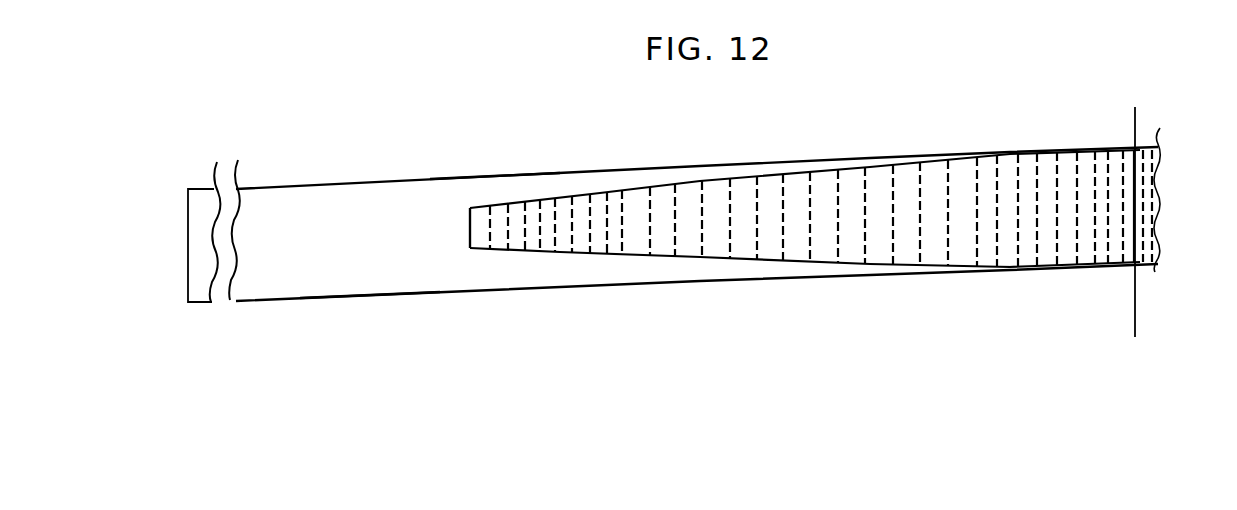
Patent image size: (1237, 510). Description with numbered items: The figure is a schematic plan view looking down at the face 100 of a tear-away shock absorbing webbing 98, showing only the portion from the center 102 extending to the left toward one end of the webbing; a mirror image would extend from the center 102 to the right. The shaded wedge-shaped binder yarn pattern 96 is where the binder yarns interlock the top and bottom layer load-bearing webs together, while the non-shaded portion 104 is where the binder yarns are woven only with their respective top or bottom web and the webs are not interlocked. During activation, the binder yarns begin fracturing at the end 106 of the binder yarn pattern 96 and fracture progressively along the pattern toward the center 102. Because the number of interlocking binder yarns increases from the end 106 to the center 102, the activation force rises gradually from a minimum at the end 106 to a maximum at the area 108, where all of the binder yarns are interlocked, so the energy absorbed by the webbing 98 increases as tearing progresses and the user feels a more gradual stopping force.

The tear-away shock absorbing webbing 98 is at (376, 126).
The face of the webbing 100 is at (442, 178).
The non-shaded portion 104 is at (388, 268).
The binder yarn pattern 96 is at (743, 200).
The end of the binder yarn pattern 106 is at (470, 232).
The area of maximum activation force 108 is at (1018, 290).
The center of the webbing 102 is at (1140, 225).